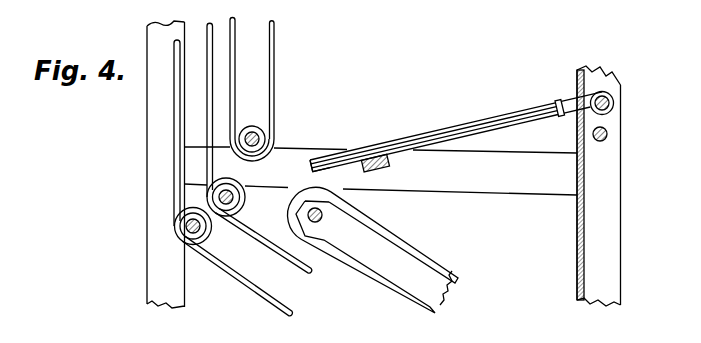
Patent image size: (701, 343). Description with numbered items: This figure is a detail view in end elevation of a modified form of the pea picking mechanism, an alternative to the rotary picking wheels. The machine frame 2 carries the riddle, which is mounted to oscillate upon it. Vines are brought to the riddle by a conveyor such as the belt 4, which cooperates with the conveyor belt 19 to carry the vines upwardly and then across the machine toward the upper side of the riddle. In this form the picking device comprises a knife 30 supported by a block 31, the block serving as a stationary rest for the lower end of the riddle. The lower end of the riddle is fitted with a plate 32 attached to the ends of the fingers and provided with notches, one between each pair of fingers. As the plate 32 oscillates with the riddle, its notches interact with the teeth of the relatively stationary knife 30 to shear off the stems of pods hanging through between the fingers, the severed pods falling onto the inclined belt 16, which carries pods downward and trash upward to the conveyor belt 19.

The machine frame 2 is at (613, 227).
The conveyor belt 4 is at (235, 77).
The belt 16 is at (397, 245).
The conveyor belt 19 is at (207, 82).
The knife 30 is at (407, 152).
The block 31 is at (385, 170).
The plate 32 is at (333, 165).